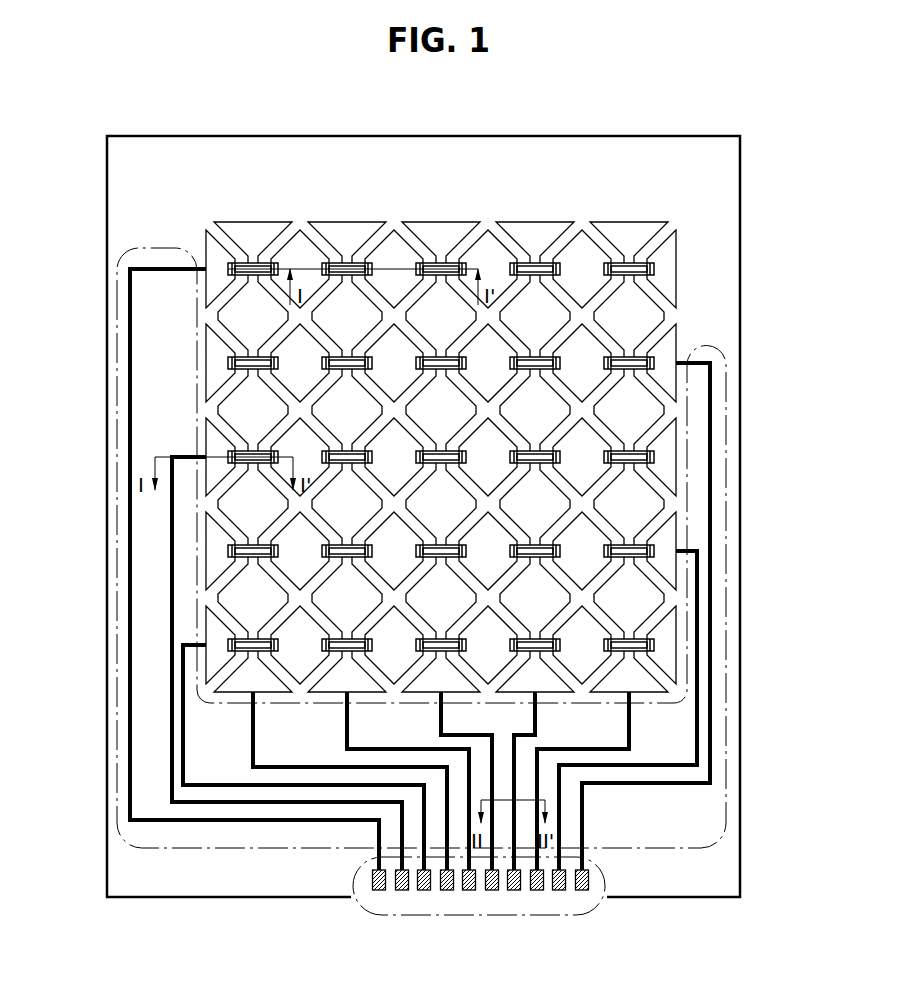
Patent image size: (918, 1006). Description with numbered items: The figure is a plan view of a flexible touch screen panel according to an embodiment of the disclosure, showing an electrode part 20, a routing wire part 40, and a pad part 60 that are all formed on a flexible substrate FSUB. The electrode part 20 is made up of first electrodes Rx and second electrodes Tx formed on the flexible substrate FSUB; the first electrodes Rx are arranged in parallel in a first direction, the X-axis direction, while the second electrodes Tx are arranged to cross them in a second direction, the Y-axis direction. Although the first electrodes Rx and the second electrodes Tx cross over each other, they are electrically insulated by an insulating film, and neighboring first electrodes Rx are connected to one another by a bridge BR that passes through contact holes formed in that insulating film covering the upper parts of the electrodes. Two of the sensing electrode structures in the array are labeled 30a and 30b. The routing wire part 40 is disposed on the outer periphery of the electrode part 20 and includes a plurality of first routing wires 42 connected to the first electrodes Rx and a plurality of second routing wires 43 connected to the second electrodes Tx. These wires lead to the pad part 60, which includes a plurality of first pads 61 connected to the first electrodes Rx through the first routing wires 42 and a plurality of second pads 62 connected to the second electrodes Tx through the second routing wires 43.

The electrode part 20 is at (508, 424).
The bridge BR is at (629, 262).
The second electrodes Tx is at (700, 457).
The first electrodes Rx is at (668, 535).
The first sensing electrode 30a is at (617, 338).
The second sensing electrode 30b is at (657, 360).
The first routing wires 42 is at (128, 306).
The second routing wires 43 is at (255, 720).
The routing wire part 40 is at (727, 800).
The flexible substrate FSUB is at (727, 872).
The pad part 60 is at (479, 915).
The first pads 61 is at (430, 893).
The second pads 62 is at (545, 893).